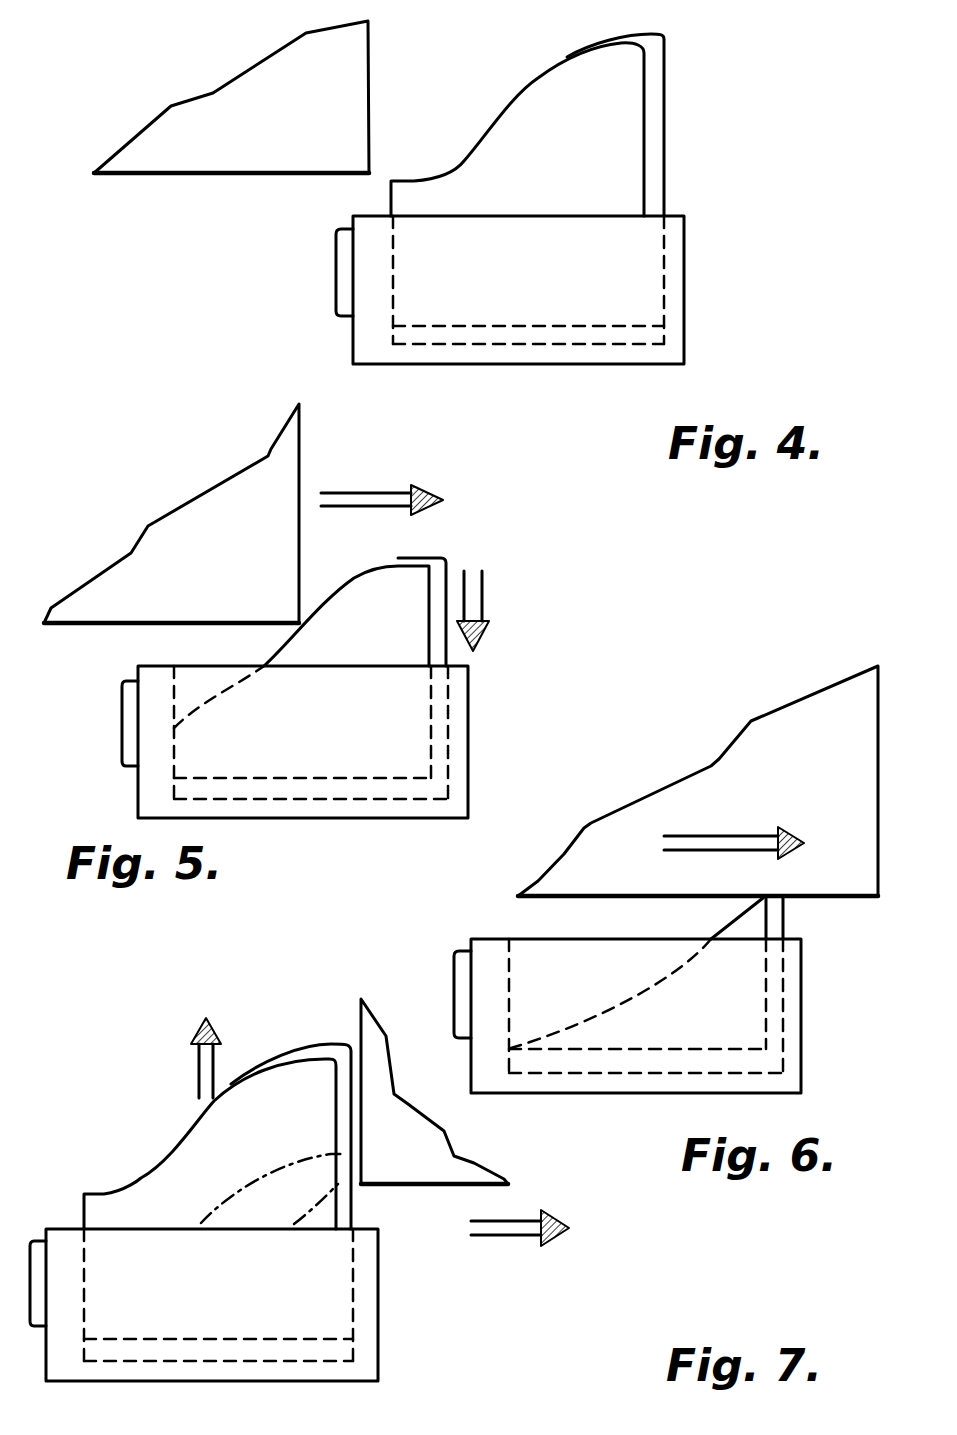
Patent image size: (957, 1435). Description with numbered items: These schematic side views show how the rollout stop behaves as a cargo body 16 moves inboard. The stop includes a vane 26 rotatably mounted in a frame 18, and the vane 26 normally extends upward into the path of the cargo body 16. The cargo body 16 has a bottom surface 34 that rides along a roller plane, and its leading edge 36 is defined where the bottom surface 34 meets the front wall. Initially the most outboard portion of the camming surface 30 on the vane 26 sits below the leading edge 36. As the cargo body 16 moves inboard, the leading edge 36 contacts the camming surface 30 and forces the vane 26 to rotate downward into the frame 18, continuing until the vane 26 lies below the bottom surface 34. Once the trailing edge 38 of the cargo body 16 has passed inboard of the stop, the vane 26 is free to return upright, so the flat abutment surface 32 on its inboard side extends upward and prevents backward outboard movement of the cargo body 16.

In FIG. 4, the cargo body 16 is at (300, 150).
In FIG. 5, the cargo body 16 is at (234, 595).
In FIG. 6, the cargo body 16 is at (816, 783).
In FIG. 7, the cargo body 16 is at (410, 1165).
In FIG. 4, the frame 18 is at (590, 287).
In FIG. 5, the frame 18 is at (372, 741).
In FIG. 6, the frame 18 is at (599, 997).
In FIG. 7, the frame 18 is at (275, 1303).
In FIG. 4, the vane 26 is at (604, 155).
In FIG. 5, the vane 26 is at (384, 639).
In FIG. 6, the vane 26 is at (637, 973).
In FIG. 7, the vane 26 is at (294, 1137).
In FIG. 4, the camming surface 30 is at (500, 117).
In FIG. 5, the camming surface 30 is at (350, 580).
In FIG. 7, the camming surface 30 is at (177, 1143).
In FIG. 4, the abutment surface 32 is at (663, 90).
In FIG. 5, the abutment surface 32 is at (448, 570).
In FIG. 6, the abutment surface 32 is at (787, 923).
In FIG. 7, the abutment surface 32 is at (291, 1136).
In FIG. 4, the bottom surface 34 is at (207, 178).
In FIG. 5, the bottom surface 34 is at (105, 625).
In FIG. 6, the bottom surface 34 is at (538, 897).
In FIG. 4, the leading edge 36 is at (380, 167).
In FIG. 6, the leading edge 36 is at (877, 897).
In FIG. 7, the trailing edge 38 is at (358, 1188).